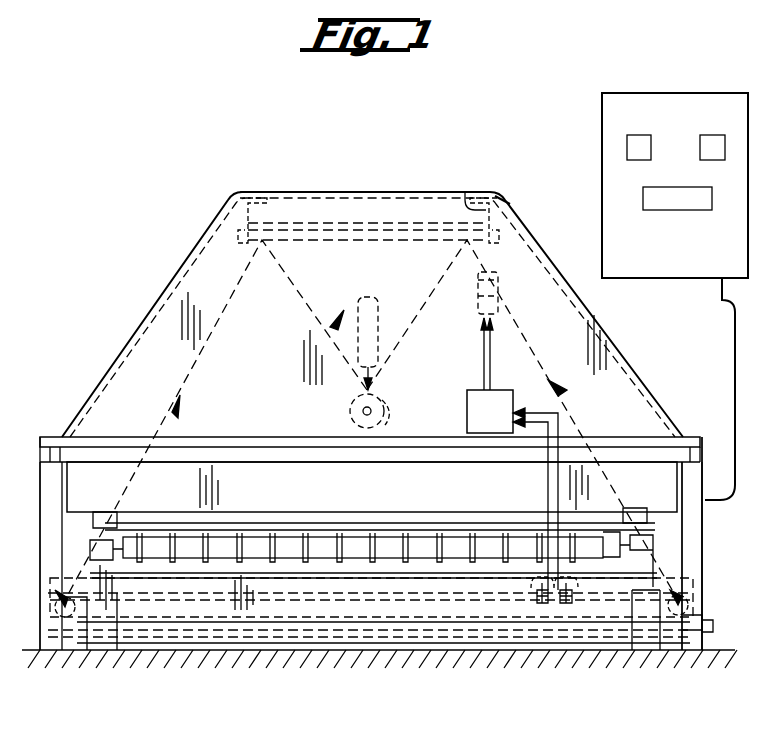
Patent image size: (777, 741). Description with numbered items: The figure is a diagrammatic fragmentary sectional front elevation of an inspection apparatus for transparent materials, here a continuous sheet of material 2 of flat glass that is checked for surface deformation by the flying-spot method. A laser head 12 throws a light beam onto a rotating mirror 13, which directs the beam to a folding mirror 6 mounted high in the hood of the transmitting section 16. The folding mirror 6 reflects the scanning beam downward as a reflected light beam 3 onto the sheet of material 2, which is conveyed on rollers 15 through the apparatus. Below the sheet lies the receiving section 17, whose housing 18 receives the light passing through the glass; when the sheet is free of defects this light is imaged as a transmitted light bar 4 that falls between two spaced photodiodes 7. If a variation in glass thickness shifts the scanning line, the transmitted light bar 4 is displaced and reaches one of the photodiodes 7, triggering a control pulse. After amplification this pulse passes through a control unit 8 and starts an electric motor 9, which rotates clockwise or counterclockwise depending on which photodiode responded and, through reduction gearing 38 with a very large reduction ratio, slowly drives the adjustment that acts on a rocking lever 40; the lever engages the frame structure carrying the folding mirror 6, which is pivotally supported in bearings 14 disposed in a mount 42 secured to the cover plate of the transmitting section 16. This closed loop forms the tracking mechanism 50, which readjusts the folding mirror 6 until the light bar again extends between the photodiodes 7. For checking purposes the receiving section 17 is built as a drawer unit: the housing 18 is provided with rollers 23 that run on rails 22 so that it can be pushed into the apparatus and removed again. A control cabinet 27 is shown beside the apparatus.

The continuous sheet of material 2 is at (315, 527).
The reflected light beam 3 is at (374, 519).
The transmitted light bar 4 is at (332, 582).
The folding mirror 6 is at (298, 238).
The photodiodes 7 is at (532, 605).
The control unit 8 is at (496, 424).
The electric motor 9 is at (502, 306).
The laser head 12 is at (375, 312).
The rotating mirror 13 is at (386, 402).
The bearings 14 is at (243, 238).
The rollers 15 is at (445, 550).
The transmitting section 16 is at (575, 340).
The receiving section 17 is at (700, 551).
The housing 18 is at (428, 605).
The rails 22 is at (200, 628).
The rollers 23 is at (66, 620).
The control cabinet 27 is at (647, 103).
The reduction gearing 38 is at (502, 283).
The rocking lever 40 is at (468, 198).
The mount 42 is at (240, 208).
The tracking mechanism 50 is at (505, 208).